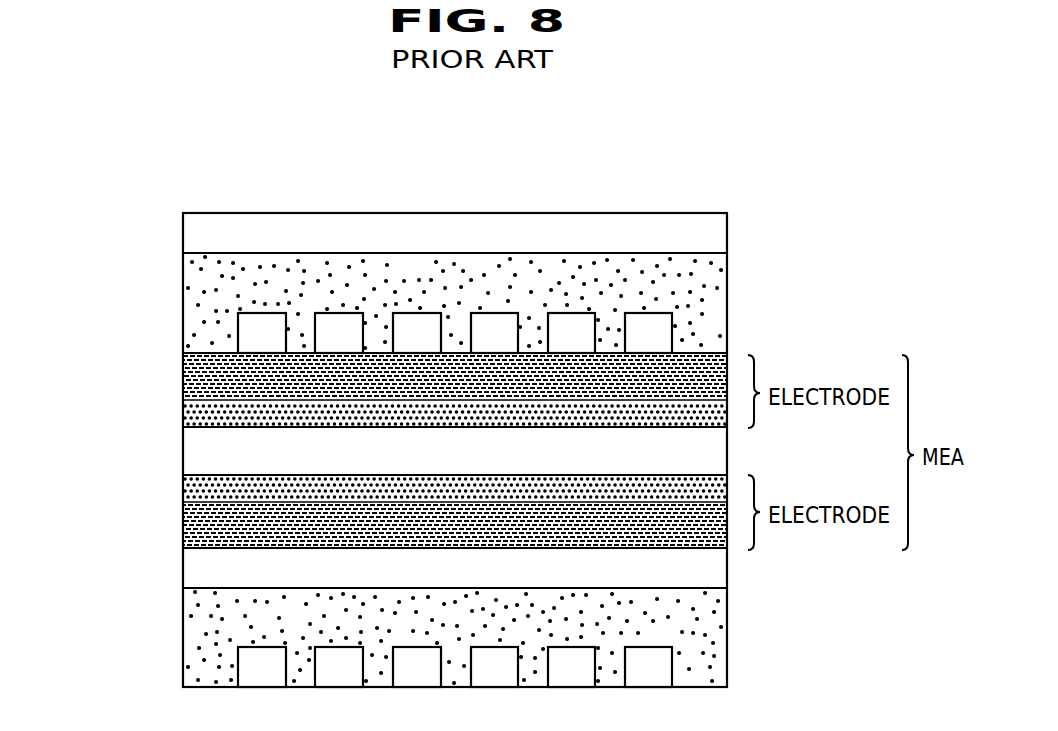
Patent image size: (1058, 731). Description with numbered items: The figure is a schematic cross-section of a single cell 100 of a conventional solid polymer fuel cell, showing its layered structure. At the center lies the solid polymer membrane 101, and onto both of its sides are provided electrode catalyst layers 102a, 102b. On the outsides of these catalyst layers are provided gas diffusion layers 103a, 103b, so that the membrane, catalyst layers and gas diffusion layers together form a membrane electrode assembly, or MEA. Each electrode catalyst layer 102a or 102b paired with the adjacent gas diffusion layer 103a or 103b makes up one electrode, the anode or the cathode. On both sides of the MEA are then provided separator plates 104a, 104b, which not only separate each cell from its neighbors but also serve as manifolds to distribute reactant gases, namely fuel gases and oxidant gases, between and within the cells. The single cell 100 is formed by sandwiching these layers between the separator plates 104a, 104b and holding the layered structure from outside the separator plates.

The single cell 100 is at (321, 198).
The solid polymer membrane 101 is at (192, 450).
The electrode catalyst layer 102a is at (192, 413).
The electrode catalyst layer 102b is at (192, 490).
The gas diffusion layer 103a is at (192, 373).
The gas diffusion layer 103b is at (192, 527).
The separator plate 104a is at (192, 293).
The separator plate 104b is at (192, 625).